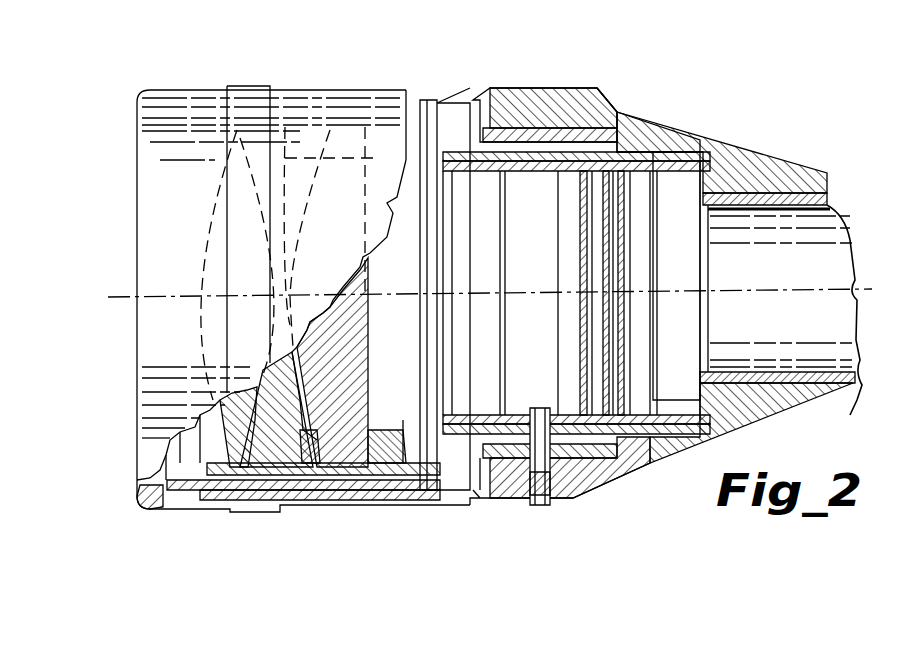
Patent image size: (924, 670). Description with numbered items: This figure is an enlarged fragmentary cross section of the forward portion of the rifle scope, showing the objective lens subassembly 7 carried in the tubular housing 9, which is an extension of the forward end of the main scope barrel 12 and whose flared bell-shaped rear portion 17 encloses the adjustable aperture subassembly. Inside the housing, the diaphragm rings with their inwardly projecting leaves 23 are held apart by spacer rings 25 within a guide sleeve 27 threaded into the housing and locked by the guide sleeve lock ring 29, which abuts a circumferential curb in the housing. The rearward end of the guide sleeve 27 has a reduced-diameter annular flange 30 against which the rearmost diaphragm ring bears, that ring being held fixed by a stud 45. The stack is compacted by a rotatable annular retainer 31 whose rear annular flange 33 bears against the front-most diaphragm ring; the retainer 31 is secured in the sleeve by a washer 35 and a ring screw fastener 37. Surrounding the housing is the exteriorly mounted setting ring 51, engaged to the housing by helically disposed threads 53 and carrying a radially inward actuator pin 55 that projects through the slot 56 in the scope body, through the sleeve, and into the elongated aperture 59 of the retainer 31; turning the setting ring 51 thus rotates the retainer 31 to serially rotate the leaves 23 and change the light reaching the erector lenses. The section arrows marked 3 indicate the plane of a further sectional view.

The section line 3- 3 is at (530, 110).
The objective lens subassembly 7 is at (410, 447).
The tubular housing 9 is at (452, 100).
The main scope barrel 12 is at (850, 415).
The flared bell-shaped rear portion 17 is at (753, 167).
The leaves 23 is at (618, 370).
The spacer rings 25 is at (620, 137).
The guide sleeve 27 is at (697, 143).
The guide sleeve lock ring 29 is at (628, 470).
The annular flange 30 is at (650, 190).
The rotatable annular retainer 31 is at (540, 157).
The annular flange 33 is at (560, 163).
The washer 35 is at (528, 268).
The ring screw fastener 37 is at (475, 405).
The stud 45 is at (665, 400).
The setting ring 51 is at (603, 103).
The helically disposed threads 53 is at (727, 427).
The actuator pin 55 is at (560, 480).
The slot 56 is at (437, 445).
The elongated aperture 59 is at (560, 405).